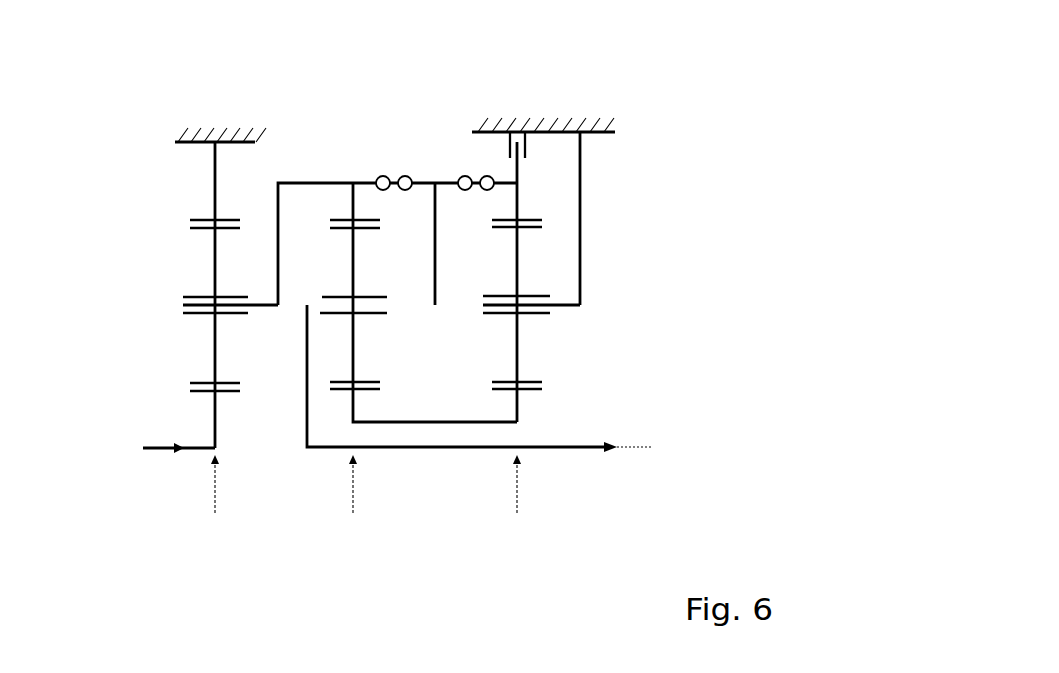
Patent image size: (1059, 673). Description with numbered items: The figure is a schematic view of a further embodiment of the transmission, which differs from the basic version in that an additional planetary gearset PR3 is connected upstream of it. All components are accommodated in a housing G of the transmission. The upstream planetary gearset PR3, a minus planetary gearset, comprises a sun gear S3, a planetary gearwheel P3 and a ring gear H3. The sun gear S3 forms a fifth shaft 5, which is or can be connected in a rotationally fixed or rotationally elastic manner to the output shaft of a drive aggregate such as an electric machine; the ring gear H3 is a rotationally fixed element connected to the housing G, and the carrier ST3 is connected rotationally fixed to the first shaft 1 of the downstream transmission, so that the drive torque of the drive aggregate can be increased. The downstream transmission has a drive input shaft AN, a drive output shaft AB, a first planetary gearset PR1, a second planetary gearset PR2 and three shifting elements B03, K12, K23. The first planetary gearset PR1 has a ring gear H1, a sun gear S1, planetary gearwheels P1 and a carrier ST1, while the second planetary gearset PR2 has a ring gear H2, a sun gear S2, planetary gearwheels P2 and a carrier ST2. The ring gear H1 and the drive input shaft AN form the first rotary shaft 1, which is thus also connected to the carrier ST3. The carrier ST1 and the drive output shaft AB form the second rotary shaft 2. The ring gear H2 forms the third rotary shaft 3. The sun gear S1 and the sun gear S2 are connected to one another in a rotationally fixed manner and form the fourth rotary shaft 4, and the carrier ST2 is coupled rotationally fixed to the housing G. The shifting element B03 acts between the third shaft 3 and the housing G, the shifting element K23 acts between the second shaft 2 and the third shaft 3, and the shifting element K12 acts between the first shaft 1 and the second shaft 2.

The housing G is at (212, 130).
The first rotary shaft 1 is at (290, 181).
The second rotary shaft 2 is at (323, 448).
The third rotary shaft 3 is at (520, 170).
The fourth rotary shaft 4 is at (448, 425).
The fifth shaft 5 is at (203, 450).
The shifting element K12 is at (393, 170).
The shifting element K23 is at (474, 170).
The shifting element B03 is at (527, 148).
The planetary gearwheel P1 is at (350, 280).
The planetary gearwheel P2 is at (520, 332).
The planetary gearwheel P3 is at (213, 347).
The ring gear H1 is at (343, 217).
The ring gear H2 is at (525, 218).
The ring gear H3 is at (197, 220).
The carrier ST1 is at (312, 300).
The carrier ST2 is at (557, 311).
The carrier ST3 is at (183, 305).
The sun gear S1 is at (368, 392).
The sun gear S2 is at (530, 390).
The sun gear S3 is at (230, 393).
The first planetary gearset PR1 is at (353, 504).
The second planetary gearset PR2 is at (517, 504).
The planetary gearset PR3 is at (215, 504).
The drive input shaft AN is at (178, 438).
The drive output shaft AB is at (616, 289).